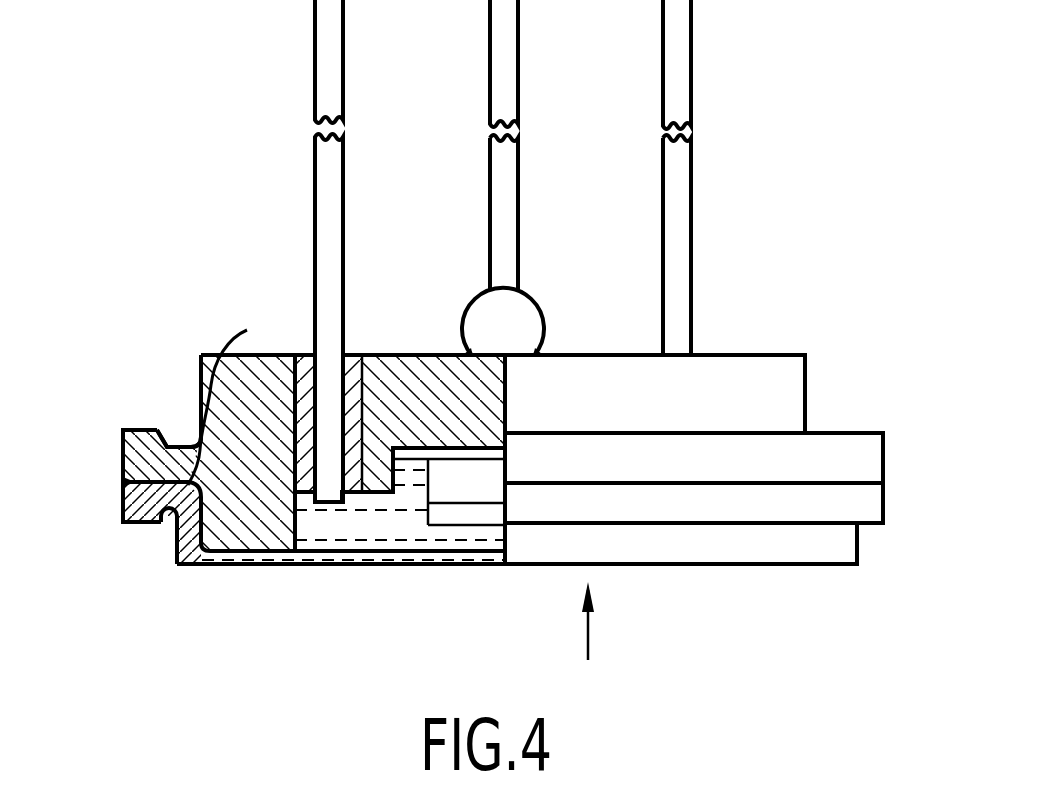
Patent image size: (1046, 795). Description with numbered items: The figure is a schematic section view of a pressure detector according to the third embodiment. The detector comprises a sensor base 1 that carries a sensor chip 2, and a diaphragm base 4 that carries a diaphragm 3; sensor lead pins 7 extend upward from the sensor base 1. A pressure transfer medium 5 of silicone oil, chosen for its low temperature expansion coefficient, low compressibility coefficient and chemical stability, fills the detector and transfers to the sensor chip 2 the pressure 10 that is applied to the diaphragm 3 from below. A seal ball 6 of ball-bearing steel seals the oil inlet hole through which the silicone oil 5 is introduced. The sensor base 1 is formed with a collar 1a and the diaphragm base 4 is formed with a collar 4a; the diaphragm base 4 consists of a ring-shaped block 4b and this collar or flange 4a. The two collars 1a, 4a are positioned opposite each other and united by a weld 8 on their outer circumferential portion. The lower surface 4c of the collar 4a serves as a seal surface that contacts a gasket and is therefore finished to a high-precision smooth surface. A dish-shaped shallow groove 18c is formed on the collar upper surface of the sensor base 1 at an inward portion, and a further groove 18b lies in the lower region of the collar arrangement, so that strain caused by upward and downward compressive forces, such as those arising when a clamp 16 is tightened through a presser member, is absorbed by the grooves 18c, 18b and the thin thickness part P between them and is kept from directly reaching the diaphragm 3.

The sensor base 1 is at (780, 390).
The collar 1a is at (133, 457).
The sensor chip 2 is at (453, 478).
The diaphragm 3 is at (463, 577).
The diaphragm base 4 is at (833, 550).
The collar 4a is at (133, 502).
The ring-shaped block 4b is at (190, 548).
The lower surface 4c is at (132, 523).
The pressure transfer medium 5 is at (370, 541).
The seal ball 6 is at (520, 302).
The sensor lead pins 7 is at (508, 79).
The weld 8 is at (123, 480).
The pressure 10 is at (588, 632).
The clamp 16 is at (140, 428).
The lower groove 18b is at (167, 514).
The shallow groove 18c is at (176, 438).
The thin thickness part P is at (226, 396).